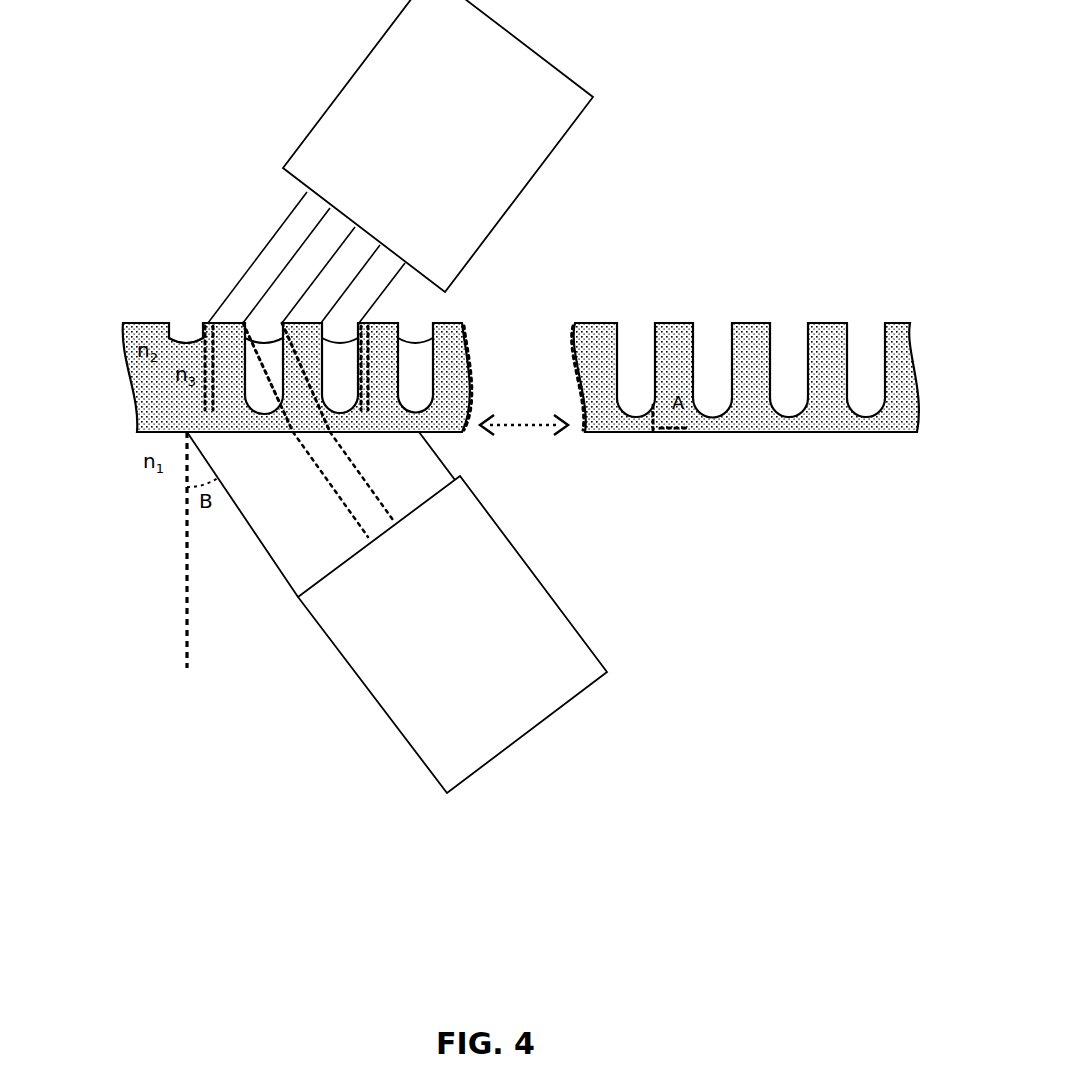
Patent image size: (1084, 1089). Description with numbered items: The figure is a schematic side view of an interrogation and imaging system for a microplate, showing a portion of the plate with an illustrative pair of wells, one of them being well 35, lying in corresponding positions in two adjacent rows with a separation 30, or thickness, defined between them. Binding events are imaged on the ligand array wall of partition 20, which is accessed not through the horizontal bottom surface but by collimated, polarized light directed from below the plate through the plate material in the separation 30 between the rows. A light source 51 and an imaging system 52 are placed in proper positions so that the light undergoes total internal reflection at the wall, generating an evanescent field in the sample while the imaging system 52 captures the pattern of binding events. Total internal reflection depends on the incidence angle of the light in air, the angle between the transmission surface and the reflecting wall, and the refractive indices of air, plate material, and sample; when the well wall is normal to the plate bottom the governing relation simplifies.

The imaging system 52 is at (522, 82).
The light source 51 is at (548, 625).
The separation 30 is at (386, 390).
The well 35 is at (428, 362).
The partition 20 is at (206, 406).